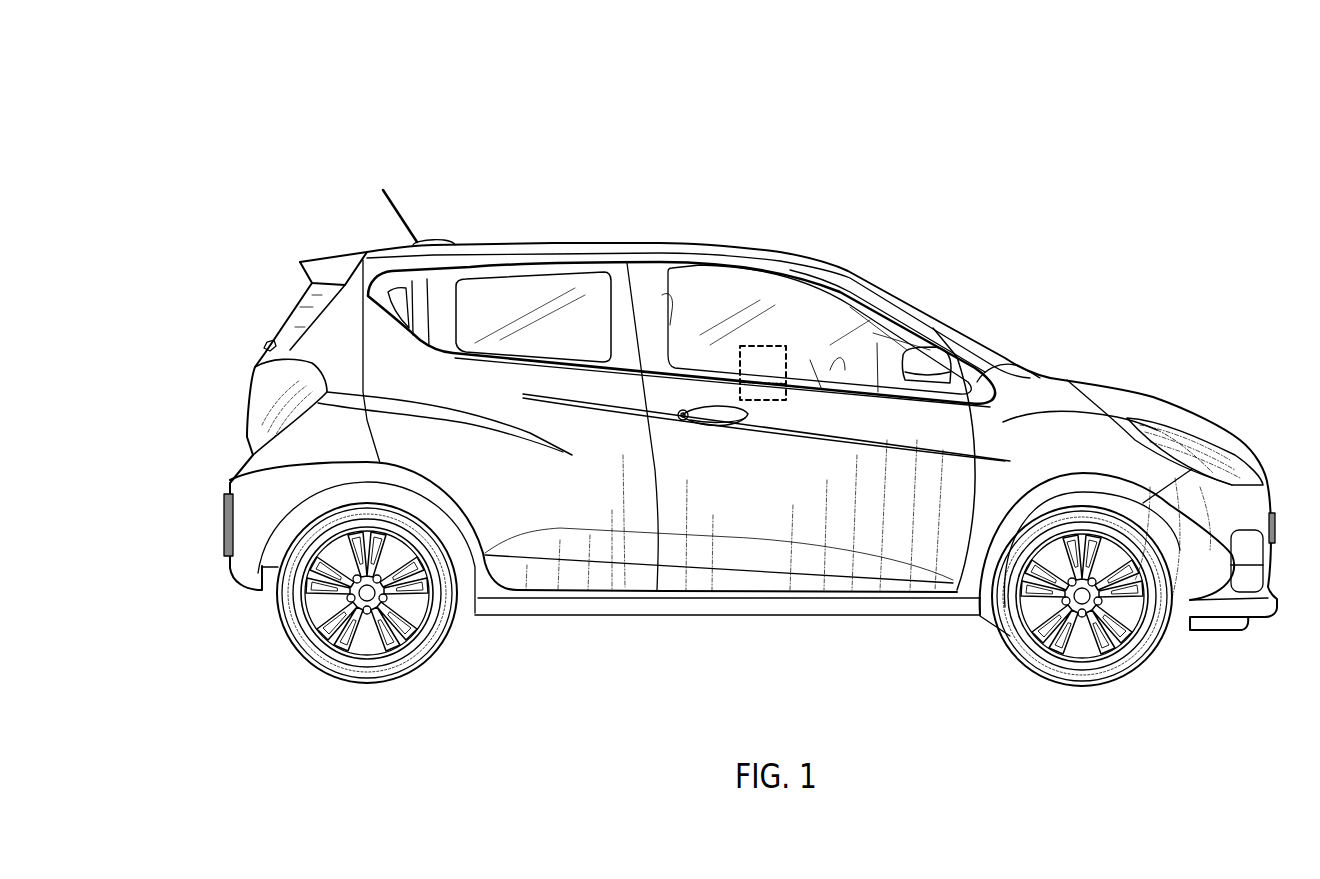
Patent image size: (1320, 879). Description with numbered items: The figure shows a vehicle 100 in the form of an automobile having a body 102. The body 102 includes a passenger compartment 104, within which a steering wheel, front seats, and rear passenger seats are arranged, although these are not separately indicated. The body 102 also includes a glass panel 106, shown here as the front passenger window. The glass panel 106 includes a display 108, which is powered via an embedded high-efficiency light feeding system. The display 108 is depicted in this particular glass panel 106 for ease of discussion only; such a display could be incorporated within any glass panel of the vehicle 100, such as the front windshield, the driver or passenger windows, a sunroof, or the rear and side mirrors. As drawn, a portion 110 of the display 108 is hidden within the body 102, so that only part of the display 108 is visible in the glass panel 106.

The vehicle 100 is at (192, 80).
The body 102 is at (566, 604).
The passenger compartment 104 is at (692, 297).
The glass panel 106 is at (838, 333).
The display 108 is at (767, 345).
The portion of the display 110 is at (762, 393).